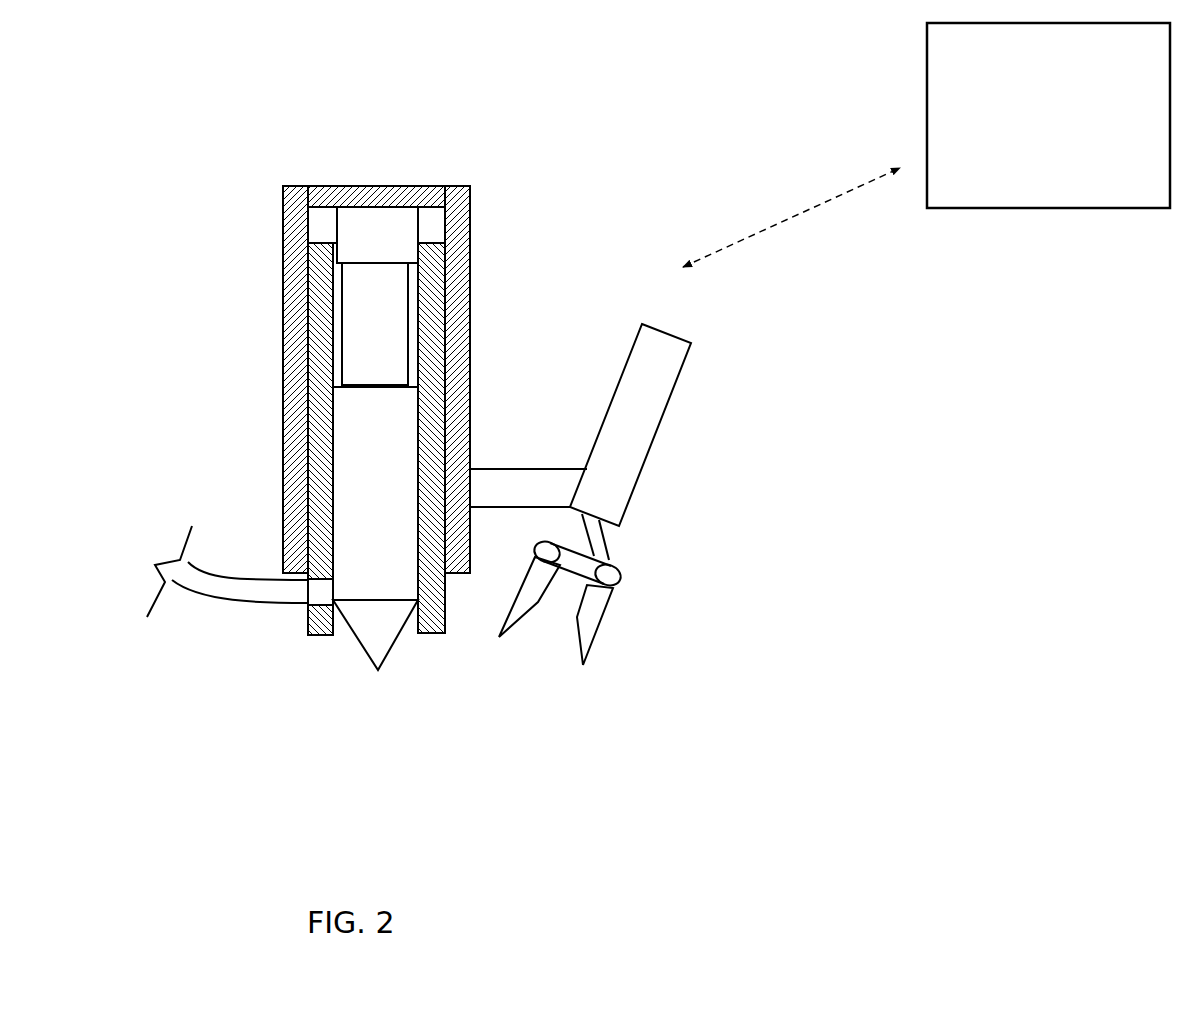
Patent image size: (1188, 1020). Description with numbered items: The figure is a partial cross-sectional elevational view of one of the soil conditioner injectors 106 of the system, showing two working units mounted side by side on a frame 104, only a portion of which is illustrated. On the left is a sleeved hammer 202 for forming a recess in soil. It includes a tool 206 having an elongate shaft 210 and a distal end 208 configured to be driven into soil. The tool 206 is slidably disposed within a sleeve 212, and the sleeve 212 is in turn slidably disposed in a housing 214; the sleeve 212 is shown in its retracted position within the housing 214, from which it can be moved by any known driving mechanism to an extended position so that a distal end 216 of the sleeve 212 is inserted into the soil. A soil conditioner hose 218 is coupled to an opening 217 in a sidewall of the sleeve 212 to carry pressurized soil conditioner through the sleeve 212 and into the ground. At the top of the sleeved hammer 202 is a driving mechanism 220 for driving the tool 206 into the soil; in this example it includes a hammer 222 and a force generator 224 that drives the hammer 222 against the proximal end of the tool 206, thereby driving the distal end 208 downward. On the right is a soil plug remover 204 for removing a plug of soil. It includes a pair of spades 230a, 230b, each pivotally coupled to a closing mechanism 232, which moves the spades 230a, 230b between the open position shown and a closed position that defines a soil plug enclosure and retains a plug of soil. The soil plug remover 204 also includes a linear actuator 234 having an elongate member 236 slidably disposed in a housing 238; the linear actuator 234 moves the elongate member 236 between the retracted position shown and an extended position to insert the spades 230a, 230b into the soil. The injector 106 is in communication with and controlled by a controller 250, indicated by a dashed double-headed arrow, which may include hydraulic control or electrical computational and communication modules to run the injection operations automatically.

The injector 106 is at (635, 399).
The sleeved hammer 202 is at (334, 428).
The soil plug remover 204 is at (681, 462).
The controller 250 is at (710, 107).
The driving mechanism 220 is at (357, 428).
The housing 214 is at (470, 262).
The sleeve 212 is at (443, 623).
The force generator 224 is at (377, 235).
The hammer 222 is at (375, 325).
The elongate shaft 210 is at (375, 493).
The opening 217 is at (307, 592).
The soil conditioner hose 218 is at (217, 600).
The distal end 208 is at (360, 642).
The tool 206 is at (387, 678).
The distal end of the sleeve 216 is at (423, 642).
The frame 104 is at (528, 488).
The linear actuator 234 is at (654, 494).
The housing 238 is at (672, 395).
The elongate member 236 is at (598, 533).
The closing mechanism 232 is at (600, 555).
The spade 230a is at (607, 613).
The spade 230b is at (525, 573).